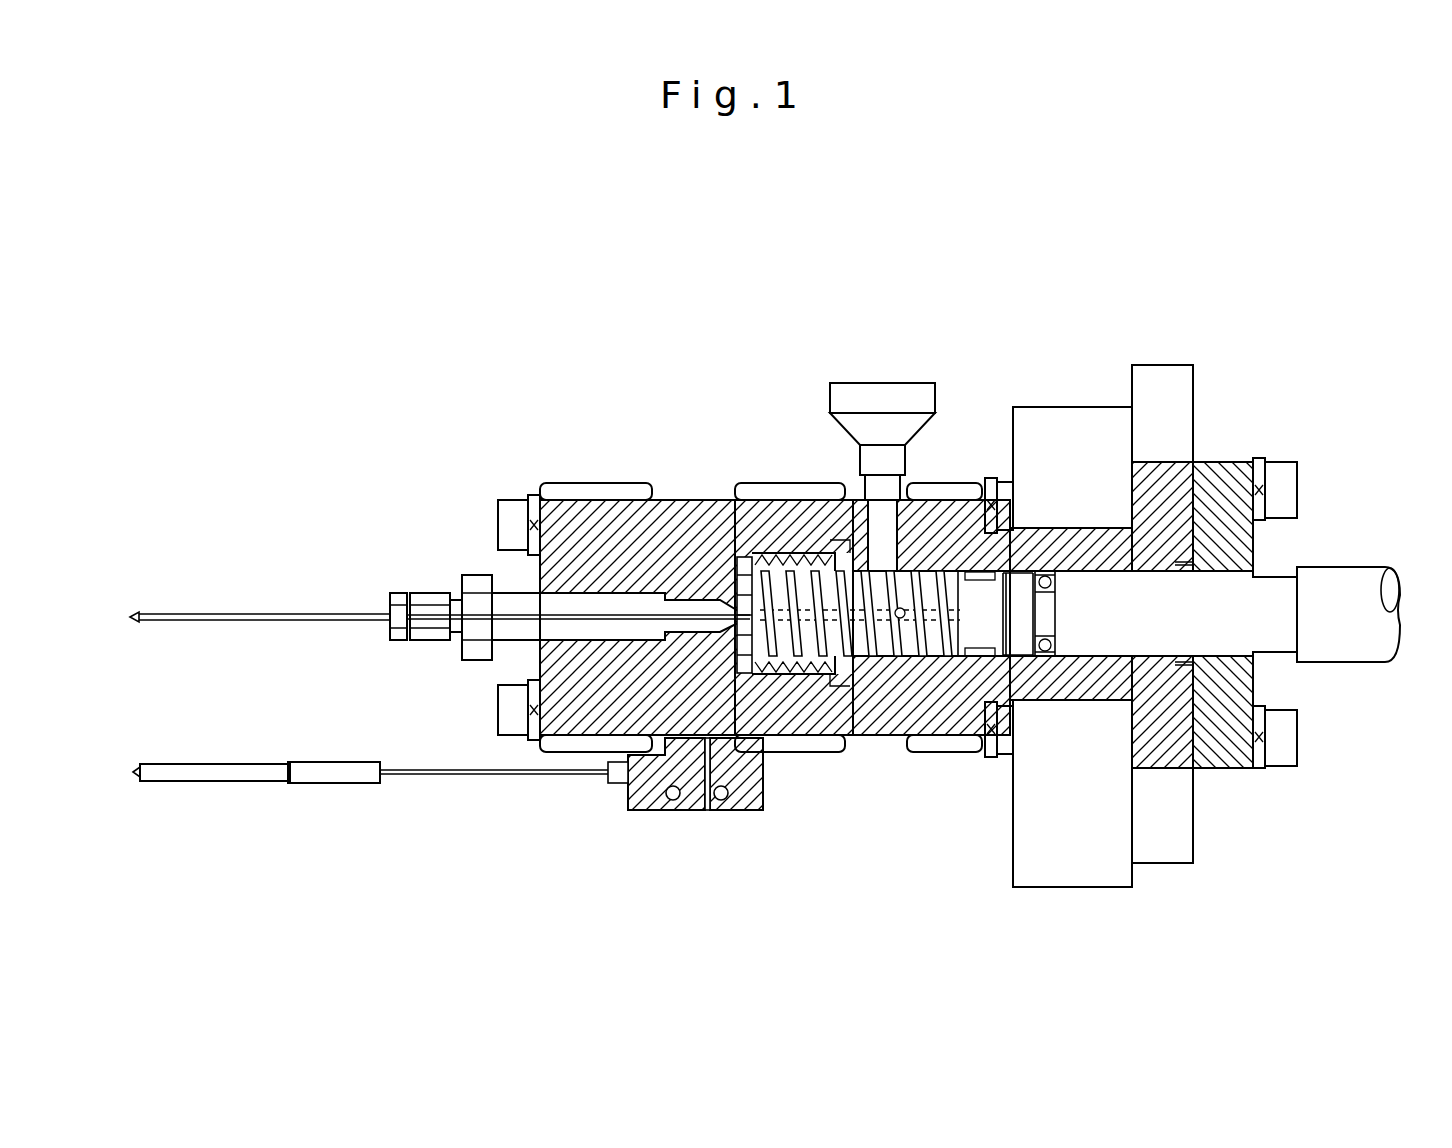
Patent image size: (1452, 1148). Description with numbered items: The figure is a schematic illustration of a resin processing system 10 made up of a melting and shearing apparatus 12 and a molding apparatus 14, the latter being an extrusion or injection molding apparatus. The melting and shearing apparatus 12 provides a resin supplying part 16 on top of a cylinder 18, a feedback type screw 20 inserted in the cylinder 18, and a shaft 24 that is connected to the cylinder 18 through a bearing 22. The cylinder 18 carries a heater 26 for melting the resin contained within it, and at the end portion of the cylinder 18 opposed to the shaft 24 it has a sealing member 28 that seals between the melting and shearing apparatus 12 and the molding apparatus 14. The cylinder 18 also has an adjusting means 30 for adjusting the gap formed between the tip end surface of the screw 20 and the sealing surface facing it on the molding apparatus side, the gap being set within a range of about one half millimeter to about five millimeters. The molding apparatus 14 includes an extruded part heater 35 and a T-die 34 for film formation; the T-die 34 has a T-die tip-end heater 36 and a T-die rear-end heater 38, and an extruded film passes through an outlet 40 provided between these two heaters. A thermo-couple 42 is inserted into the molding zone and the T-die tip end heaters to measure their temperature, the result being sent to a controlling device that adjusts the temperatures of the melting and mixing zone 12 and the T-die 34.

The resin processing system 10 is at (704, 560).
The melting and shearing apparatus 12 is at (1008, 370).
The molding apparatus 14 is at (478, 458).
The resin supplying part 16 is at (880, 395).
The cylinder 18 is at (948, 703).
The feedback type screw 20 is at (853, 682).
The bearing 22 is at (1045, 648).
The shaft 24 is at (1343, 583).
The heater 26 is at (790, 752).
The sealing member 28 is at (733, 556).
The adjusting means 30 is at (778, 515).
The T-die 34 is at (718, 828).
The extruded part heater 35 is at (558, 752).
The T-die tip-end heater 36 is at (670, 812).
The T-die rear-end heater 38 is at (728, 812).
The outlet 40 is at (706, 812).
The thermo-couple 42 is at (295, 612).